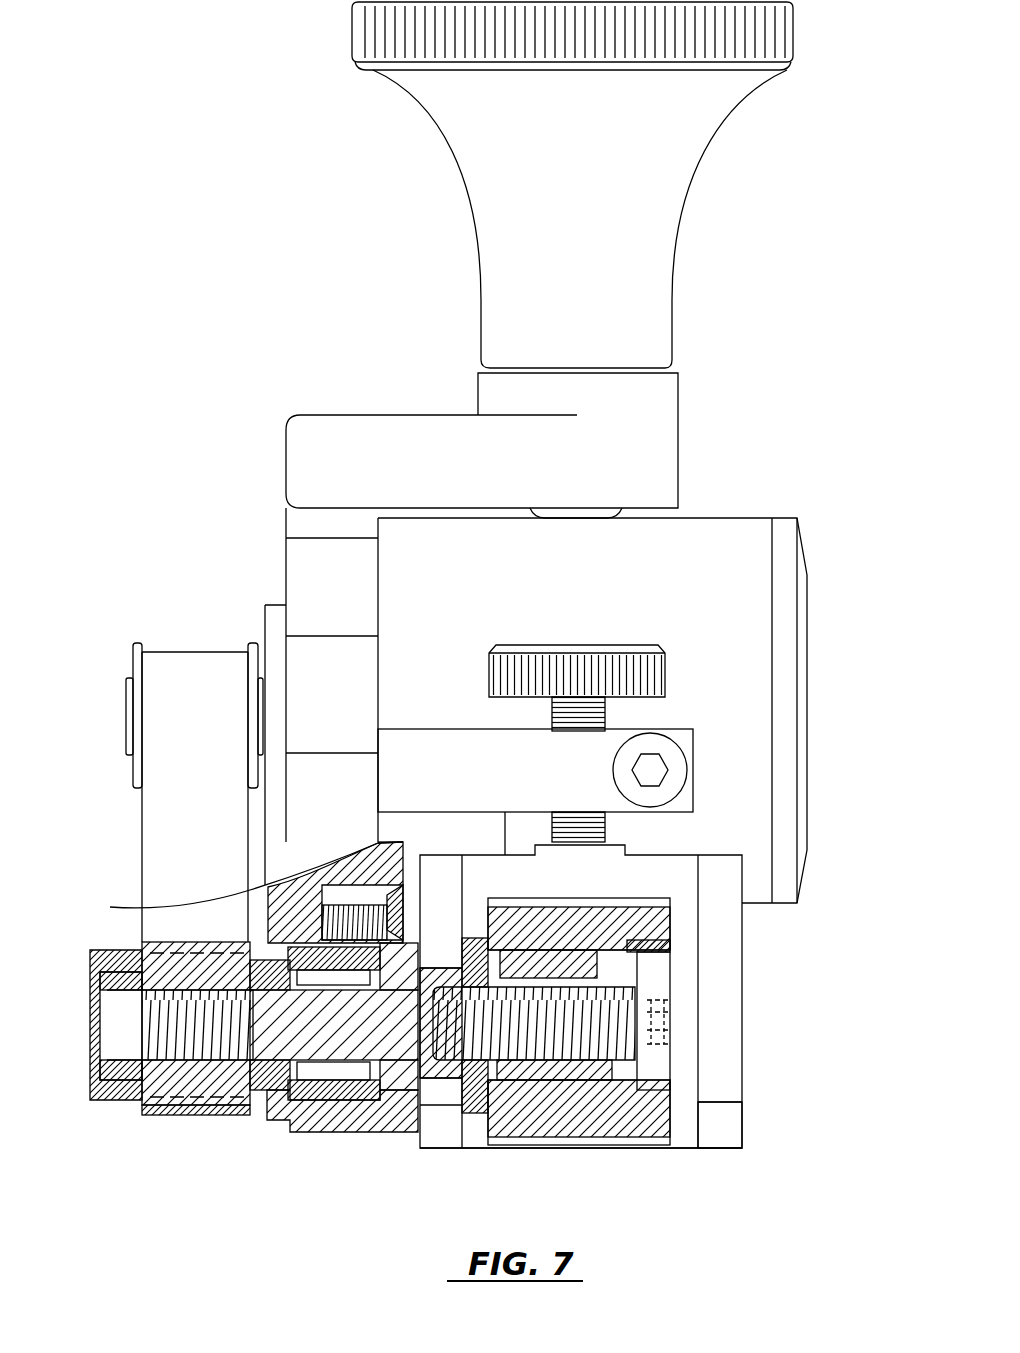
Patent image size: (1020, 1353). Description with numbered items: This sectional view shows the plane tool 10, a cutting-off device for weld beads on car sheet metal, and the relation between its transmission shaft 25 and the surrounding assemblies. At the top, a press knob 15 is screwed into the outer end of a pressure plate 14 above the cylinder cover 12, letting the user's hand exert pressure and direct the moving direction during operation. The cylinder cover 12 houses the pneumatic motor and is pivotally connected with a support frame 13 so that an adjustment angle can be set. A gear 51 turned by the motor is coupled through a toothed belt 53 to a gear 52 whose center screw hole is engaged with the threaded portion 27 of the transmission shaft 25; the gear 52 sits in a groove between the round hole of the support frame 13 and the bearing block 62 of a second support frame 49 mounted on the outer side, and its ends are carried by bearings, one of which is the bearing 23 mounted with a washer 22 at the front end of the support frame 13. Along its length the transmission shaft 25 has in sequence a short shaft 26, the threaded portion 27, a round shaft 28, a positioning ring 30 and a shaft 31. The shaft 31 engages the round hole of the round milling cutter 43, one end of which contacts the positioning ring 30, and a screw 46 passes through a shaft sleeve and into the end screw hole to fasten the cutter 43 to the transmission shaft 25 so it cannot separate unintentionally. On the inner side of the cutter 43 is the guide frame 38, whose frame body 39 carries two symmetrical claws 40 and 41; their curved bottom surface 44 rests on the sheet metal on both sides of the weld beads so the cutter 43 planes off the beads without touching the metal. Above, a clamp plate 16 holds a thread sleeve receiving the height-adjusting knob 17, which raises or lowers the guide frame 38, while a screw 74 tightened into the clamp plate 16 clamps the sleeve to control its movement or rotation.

The plane tool 10 is at (745, 435).
The cylinder cover 12 is at (790, 590).
The support frame 13 is at (318, 590).
The pressure plate 14 is at (420, 440).
The press knob 15 is at (645, 272).
The clamp plate 16 is at (440, 750).
The height-adjusting knob 17 is at (650, 660).
The washer 22 is at (275, 1110).
The bearing 23 is at (352, 1110).
The transmission shaft 25 is at (398, 1036).
The short shaft 26 is at (125, 1030).
The threaded portion 27 is at (180, 1080).
The round shaft 28 is at (330, 1085).
The positioning ring 30 is at (478, 1130).
The shaft 31 is at (575, 1130).
The guide frame 38 is at (760, 973).
The frame body 39 is at (655, 875).
The claw 40 is at (440, 1130).
The claw 41 is at (730, 1118).
The round milling cutter 43 is at (640, 1130).
The bottom surface 44 is at (722, 1150).
The screw 46 is at (655, 1072).
The support frame 49 is at (105, 940).
The gear 51 is at (125, 710).
The gear 52 is at (230, 1098).
The belt 53 is at (182, 677).
The bearing block 62 is at (107, 1080).
The screw 74 is at (665, 755).